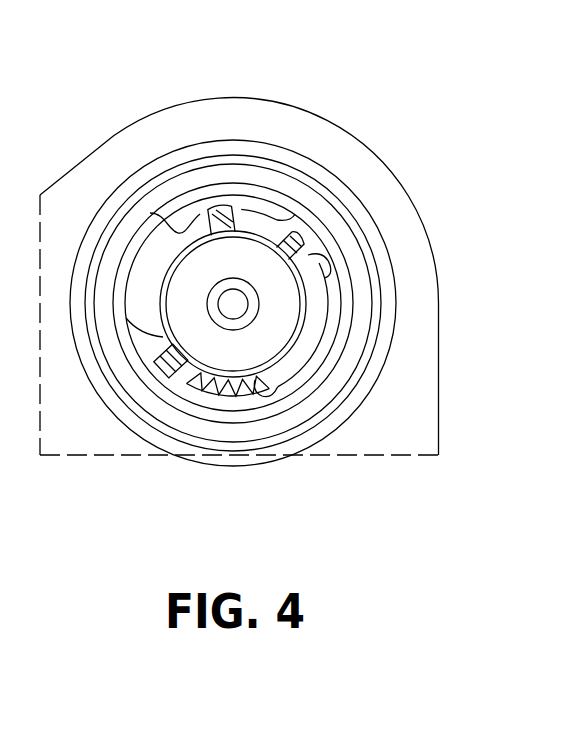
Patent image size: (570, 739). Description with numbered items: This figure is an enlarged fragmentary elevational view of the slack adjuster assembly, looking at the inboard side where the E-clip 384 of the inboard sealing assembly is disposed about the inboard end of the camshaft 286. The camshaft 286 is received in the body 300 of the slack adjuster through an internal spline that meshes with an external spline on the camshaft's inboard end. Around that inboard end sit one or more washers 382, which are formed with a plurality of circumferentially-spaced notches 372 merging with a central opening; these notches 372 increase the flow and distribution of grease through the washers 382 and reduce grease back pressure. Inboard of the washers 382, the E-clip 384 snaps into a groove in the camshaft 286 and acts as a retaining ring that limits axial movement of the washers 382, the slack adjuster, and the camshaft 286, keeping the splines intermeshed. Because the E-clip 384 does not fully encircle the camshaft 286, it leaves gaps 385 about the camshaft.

The body 300 is at (393, 175).
The camshaft 286 is at (215, 258).
The washers 382 is at (258, 417).
The E-clip 384 is at (289, 399).
The gaps 385 is at (324, 261).
The notches 372 is at (182, 380).